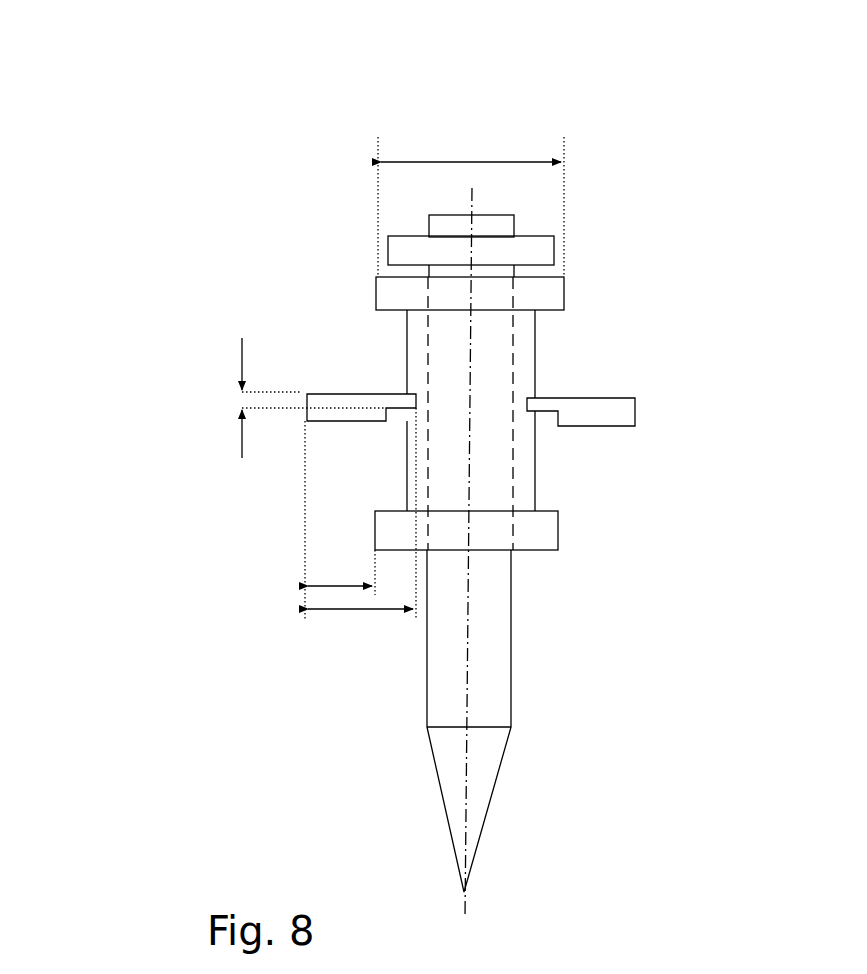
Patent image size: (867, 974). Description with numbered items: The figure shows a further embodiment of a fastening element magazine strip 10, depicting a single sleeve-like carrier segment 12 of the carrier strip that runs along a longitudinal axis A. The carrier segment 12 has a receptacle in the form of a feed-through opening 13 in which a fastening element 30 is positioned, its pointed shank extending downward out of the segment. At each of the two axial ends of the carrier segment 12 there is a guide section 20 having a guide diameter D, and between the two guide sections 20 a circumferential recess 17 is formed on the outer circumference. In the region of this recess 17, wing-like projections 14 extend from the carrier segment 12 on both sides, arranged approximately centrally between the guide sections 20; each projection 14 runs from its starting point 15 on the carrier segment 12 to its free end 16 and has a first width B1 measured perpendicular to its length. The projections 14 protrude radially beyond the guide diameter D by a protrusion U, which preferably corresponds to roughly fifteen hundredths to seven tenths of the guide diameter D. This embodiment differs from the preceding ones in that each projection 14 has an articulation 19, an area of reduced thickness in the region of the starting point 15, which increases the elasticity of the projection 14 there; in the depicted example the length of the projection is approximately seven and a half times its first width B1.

The fastening element magazine strip 10 is at (215, 96).
The carrier segment 12 is at (405, 330).
The feed-through opening 13 is at (428, 497).
The projection 14 is at (610, 415).
The starting point 15 is at (398, 386).
The free end 16 is at (299, 400).
The circumferential recess 17 is at (549, 326).
The articulation 19 is at (544, 412).
The guide section 20 is at (377, 278).
The fastening element 30 is at (490, 603).
The longitudinal axis A is at (463, 698).
The guide diameter D is at (417, 162).
The first width B1 is at (242, 364).
The protrusion U is at (338, 585).